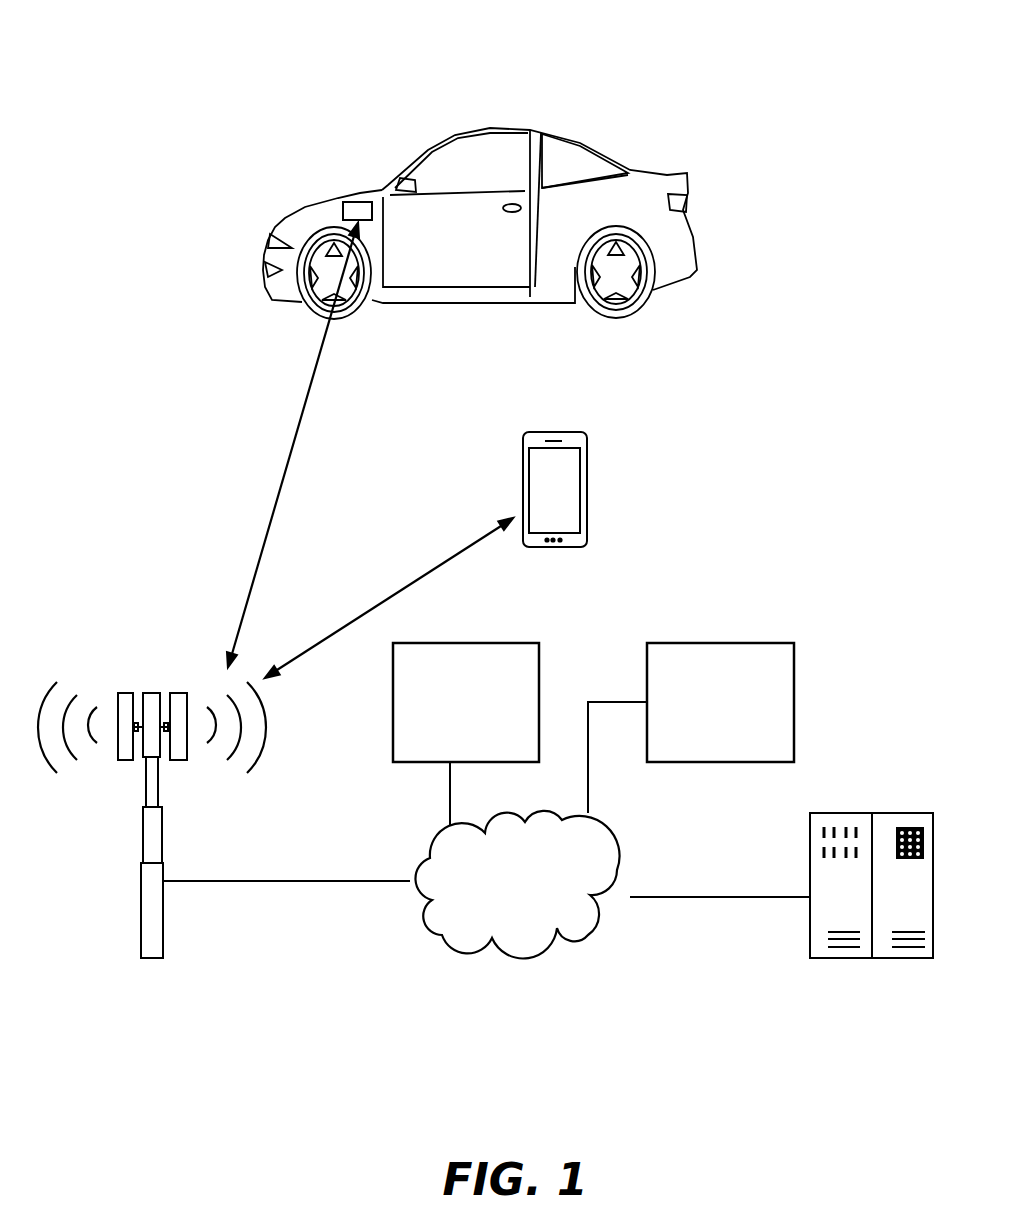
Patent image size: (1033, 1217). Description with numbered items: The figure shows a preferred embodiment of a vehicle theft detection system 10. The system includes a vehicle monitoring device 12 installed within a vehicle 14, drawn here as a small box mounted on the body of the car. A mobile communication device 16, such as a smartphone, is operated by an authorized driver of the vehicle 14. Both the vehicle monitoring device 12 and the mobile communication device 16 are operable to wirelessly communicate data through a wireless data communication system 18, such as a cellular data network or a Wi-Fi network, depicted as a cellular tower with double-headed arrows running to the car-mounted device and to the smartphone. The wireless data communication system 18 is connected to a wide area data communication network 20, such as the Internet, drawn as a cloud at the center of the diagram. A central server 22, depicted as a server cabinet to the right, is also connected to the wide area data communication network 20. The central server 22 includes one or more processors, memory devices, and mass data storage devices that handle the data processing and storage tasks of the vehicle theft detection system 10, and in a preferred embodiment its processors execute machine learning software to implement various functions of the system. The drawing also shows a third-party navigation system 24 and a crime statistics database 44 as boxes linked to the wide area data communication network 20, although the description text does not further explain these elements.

The vehicle theft detection system 10 is at (68, 54).
The vehicle monitoring device 12 is at (357, 198).
The vehicle 14 is at (530, 132).
The mobile communication device 16 is at (560, 432).
The wireless data communication system 18 is at (163, 847).
The wide area data communication network 20 is at (587, 937).
The central server 22 is at (898, 813).
The third-party navigation system 24 is at (795, 667).
The crime statistics database 44 is at (542, 663).